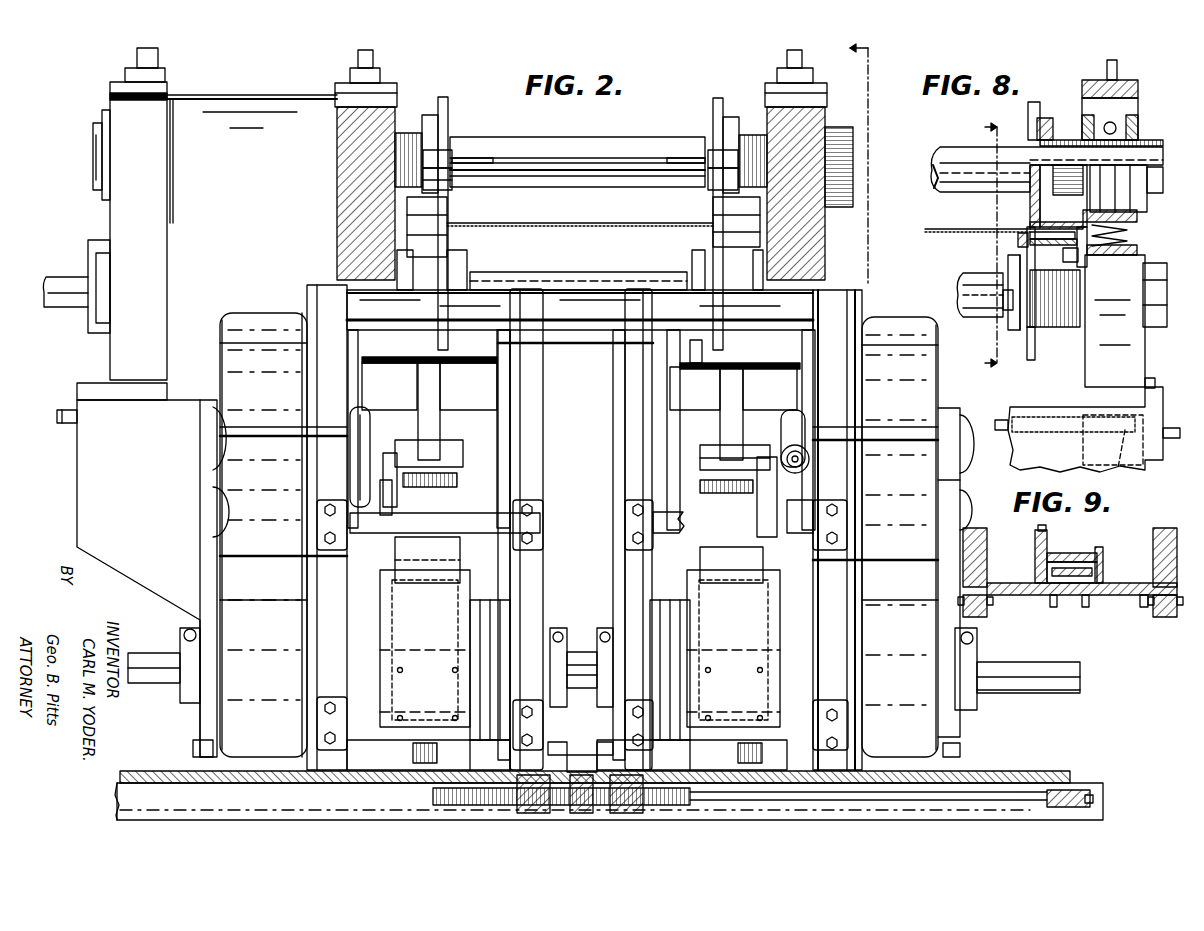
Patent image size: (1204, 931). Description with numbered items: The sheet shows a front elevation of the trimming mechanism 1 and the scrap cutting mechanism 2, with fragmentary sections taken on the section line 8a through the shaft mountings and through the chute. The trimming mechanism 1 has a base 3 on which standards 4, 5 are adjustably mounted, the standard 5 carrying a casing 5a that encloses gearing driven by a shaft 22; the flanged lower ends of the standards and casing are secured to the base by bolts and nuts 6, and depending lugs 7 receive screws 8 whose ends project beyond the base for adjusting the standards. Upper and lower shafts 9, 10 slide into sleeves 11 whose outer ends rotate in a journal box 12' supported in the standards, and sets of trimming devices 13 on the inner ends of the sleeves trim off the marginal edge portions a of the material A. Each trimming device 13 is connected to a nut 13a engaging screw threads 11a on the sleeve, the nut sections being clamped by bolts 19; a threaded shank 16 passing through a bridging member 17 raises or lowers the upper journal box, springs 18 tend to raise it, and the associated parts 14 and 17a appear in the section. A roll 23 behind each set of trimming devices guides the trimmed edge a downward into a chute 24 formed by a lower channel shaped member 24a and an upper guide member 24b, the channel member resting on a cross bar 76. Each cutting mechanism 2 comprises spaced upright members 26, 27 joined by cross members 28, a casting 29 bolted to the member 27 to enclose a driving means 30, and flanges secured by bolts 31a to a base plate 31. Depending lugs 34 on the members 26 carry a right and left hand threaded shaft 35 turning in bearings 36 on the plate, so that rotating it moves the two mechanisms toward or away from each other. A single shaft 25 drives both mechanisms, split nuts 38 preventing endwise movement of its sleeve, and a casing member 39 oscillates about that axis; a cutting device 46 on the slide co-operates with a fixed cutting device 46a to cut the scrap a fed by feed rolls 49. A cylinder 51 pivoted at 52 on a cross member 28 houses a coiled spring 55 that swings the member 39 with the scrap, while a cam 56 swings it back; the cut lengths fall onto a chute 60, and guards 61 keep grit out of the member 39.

In FIG. 2, the trimming mechanism 1 is at (483, 163).
In FIG. 2, the scrap cutting mechanism 2 is at (579, 527).
In FIG. 2, the base 3 is at (80, 503).
In FIG. 8, the base 3 is at (1015, 455).
In FIG. 2, the standard 4 is at (826, 255).
In FIG. 8, the standard 4 is at (1085, 372).
In FIG. 2, the standard 5 is at (332, 210).
In FIG. 2, the casing 5a is at (225, 247).
In FIG. 8, the bolts and nuts 6 is at (1150, 377).
In FIG. 8, the depending lugs 7 is at (1120, 459).
In FIG. 2, the screws 8 is at (64, 410).
In FIG. 8, the screws 8 is at (1000, 420).
In FIG. 8, the section line 8a is at (981, 249).
In FIG. 2, the upper shaft 9 is at (632, 143).
In FIG. 8, the upper shaft 9 is at (950, 153).
In FIG. 2, the lower shaft 10 is at (565, 272).
In FIG. 8, the lower shaft 10 is at (968, 280).
In FIG. 2, the sleeves 11 is at (408, 133).
In FIG. 8, the sleeves 11 is at (1063, 137).
In FIG. 8, the screw threads 11a is at (1058, 197).
In FIG. 2, the hub 12' is at (86, 140).
In FIG. 2, the trimming devices 13 is at (441, 130).
In FIG. 8, the trimming devices 13 is at (1027, 112).
In FIG. 2, the nut 13a is at (438, 118).
In FIG. 8, the nut 13a is at (1047, 117).
In FIG. 8, the bearing cap 14 is at (1122, 151).
In FIG. 2, the threaded shanks 16 is at (374, 60).
In FIG. 8, the threaded shanks 16 is at (1105, 70).
In FIG. 8, the bridging member 17 is at (1083, 275).
In FIG. 8, the threaded shank 17a is at (1063, 328).
In FIG. 8, the springs 18 is at (1118, 256).
In FIG. 9, the springs 18 is at (1039, 545).
In FIG. 2, the bolts 19 is at (442, 150).
In FIG. 8, the bolts 19 is at (1008, 330).
In FIG. 2, the shaft 22 is at (62, 282).
In FIG. 2, the roll 23 is at (340, 238).
In FIG. 9, the chute 24 is at (1088, 565).
In FIG. 8, the lower channel shaped member 24a is at (1016, 240).
In FIG. 9, the lower channel shaped member 24a is at (1070, 596).
In FIG. 9, the upper guide member 24b is at (1075, 552).
In FIG. 2, the shaft 25 is at (1030, 690).
In FIG. 2, the upright member 26 is at (540, 490).
In FIG. 9, the upright member 26 is at (977, 528).
In FIG. 2, the upright member 27 is at (835, 668).
In FIG. 9, the upright member 27 is at (1163, 528).
In FIG. 2, the cross members 28 is at (800, 290).
In FIG. 2, the casting 29 is at (225, 357).
In FIG. 2, the driving means 30 is at (445, 805).
In FIG. 2, the base plate 31 is at (1050, 775).
In FIG. 2, the bolts 31a is at (200, 742).
In FIG. 2, the depending lugs 34 is at (580, 755).
In FIG. 2, the shaft 35 is at (980, 800).
In FIG. 2, the bearings 36 is at (600, 766).
In FIG. 2, the split nuts 38 is at (190, 663).
In FIG. 2, the casing member 39 is at (470, 575).
In FIG. 2, the cutting device 46 is at (445, 472).
In FIG. 2, the cutting device 46a is at (700, 458).
In FIG. 2, the feed rolls 49 is at (688, 362).
In FIG. 2, the cylinder 51 is at (350, 452).
In FIG. 2, the pivot 52 is at (392, 515).
In FIG. 2, the coiled spring 55 is at (810, 459).
In FIG. 2, the cam 56 is at (388, 452).
In FIG. 2, the chute 60 is at (567, 756).
In FIG. 2, the guards 61 is at (445, 595).
In FIG. 9, the cross bar 76 is at (1130, 596).
In FIG. 2, the material A is at (558, 222).
In FIG. 8, the material A is at (950, 227).
In FIG. 8, the marginal edge portions a is at (1062, 252).